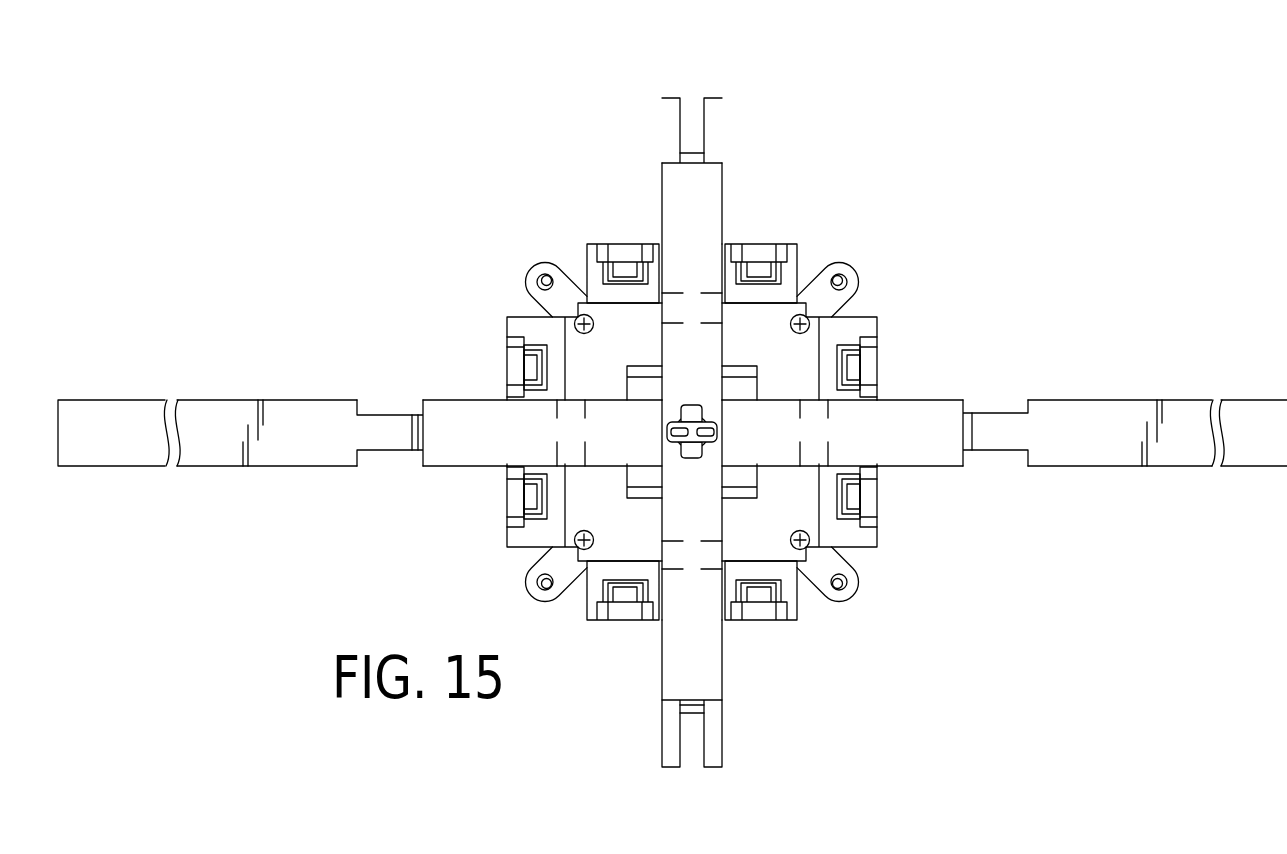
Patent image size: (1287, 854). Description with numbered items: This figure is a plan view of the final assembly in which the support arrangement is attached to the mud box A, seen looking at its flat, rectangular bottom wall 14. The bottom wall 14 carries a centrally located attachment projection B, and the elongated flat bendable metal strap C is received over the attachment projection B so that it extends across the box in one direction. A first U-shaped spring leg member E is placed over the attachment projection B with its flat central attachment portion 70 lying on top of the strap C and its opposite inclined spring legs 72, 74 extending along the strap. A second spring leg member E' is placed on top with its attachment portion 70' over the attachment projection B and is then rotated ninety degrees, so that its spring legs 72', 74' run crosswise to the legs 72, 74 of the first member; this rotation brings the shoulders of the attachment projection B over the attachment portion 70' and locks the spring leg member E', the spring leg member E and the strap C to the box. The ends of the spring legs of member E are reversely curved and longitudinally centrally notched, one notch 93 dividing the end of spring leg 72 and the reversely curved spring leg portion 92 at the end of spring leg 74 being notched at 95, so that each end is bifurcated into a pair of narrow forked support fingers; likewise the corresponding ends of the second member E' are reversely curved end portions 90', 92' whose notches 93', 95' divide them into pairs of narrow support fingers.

The bottom wall 14 is at (608, 324).
The flat central attachment portion 70 is at (799, 405).
The attachment portion 70' is at (732, 510).
The spring leg 72 is at (419, 454).
The first channel member (second) 72' is at (701, 250).
The spring leg 74 is at (1082, 405).
The second channel member (second) 74' is at (732, 660).
The end connector 90' is at (576, 276).
The reversely curved spring leg portion 92 is at (1025, 394).
The end connector (second) 92' is at (642, 764).
The notch 93 is at (387, 470).
The connector rib (second) 93' is at (698, 99).
The notch 95 is at (1030, 433).
The connector rib (second) 95' is at (706, 767).
The mud box A is at (805, 250).
The attachment projection B is at (692, 455).
The strap C is at (212, 397).
The spring leg member E is at (459, 515).
The spring leg member E' is at (767, 172).